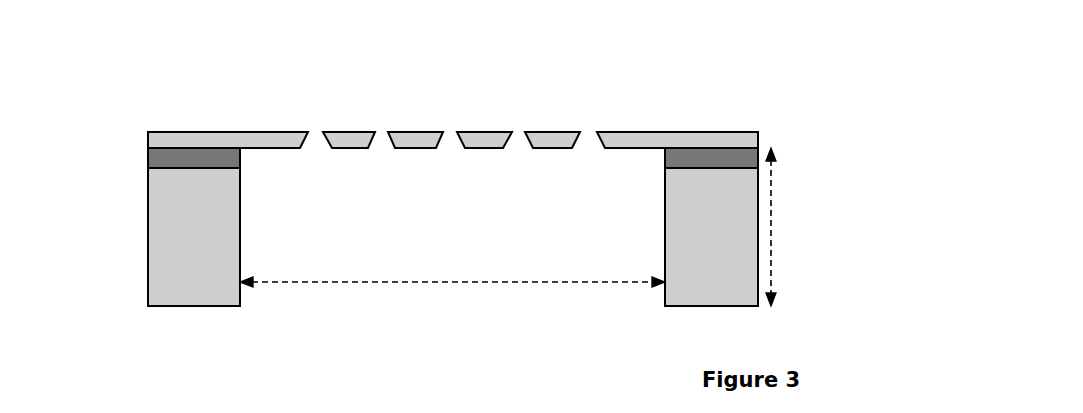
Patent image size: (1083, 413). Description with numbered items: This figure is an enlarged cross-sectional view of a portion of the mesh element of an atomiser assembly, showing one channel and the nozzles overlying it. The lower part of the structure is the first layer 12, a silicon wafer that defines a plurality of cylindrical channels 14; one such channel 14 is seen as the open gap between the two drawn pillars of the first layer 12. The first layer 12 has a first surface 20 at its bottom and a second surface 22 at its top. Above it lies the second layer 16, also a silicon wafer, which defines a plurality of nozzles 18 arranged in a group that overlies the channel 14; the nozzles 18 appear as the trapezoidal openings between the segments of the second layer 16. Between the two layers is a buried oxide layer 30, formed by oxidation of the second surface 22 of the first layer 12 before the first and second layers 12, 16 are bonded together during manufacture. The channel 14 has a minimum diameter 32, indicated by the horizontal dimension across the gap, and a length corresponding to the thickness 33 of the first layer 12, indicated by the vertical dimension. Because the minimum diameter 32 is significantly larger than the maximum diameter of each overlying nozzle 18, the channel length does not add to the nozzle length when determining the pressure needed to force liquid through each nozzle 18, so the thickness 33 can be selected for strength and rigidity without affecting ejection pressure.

The first layer 12 is at (178, 218).
The cylindrical channel 14 is at (275, 227).
The second layer 16 is at (750, 138).
The nozzle 18 is at (450, 137).
The first surface 20 is at (177, 307).
The second surface 22 is at (177, 146).
The buried oxide layer 30 is at (212, 157).
The minimum diameter 32 is at (453, 283).
The thickness 33 is at (772, 222).